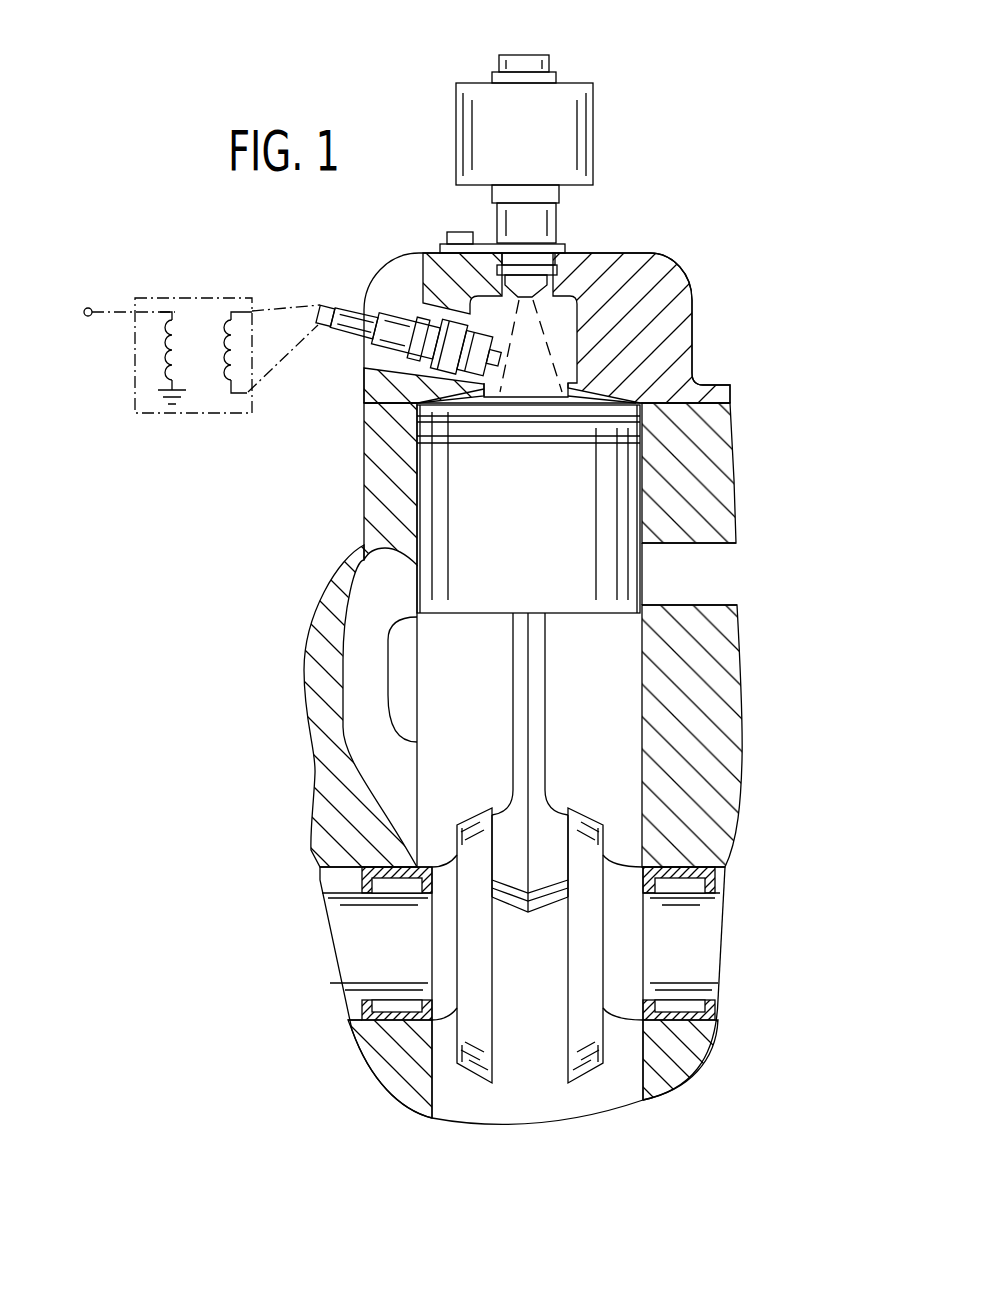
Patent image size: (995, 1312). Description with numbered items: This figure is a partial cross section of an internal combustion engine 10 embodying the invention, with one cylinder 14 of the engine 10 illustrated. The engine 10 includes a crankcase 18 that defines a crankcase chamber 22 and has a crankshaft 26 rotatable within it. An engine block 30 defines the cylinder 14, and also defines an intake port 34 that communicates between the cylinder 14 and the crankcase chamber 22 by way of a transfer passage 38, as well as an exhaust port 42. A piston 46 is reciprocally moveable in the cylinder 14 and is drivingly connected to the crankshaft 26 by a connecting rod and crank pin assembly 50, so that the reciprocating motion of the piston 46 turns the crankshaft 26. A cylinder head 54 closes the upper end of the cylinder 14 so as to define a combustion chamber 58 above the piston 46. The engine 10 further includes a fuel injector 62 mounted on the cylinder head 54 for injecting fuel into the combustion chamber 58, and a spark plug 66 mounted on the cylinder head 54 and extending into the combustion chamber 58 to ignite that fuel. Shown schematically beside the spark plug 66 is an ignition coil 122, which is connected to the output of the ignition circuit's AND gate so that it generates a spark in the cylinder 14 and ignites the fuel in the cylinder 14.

The internal combustion engine 10 is at (764, 197).
The cylinder 14 is at (425, 482).
The crankcase 18 is at (713, 728).
The crankcase chamber 22 is at (642, 1085).
The crankshaft 26 is at (626, 996).
The engine block 30 is at (705, 468).
The intake port 34 is at (365, 590).
The transfer passage 38 is at (357, 770).
The exhaust port 42 is at (688, 600).
The piston 46 is at (546, 531).
The connecting rod and crank pin assembly 50 is at (515, 703).
The cylinder head 54 is at (666, 272).
The combustion chamber 58 is at (578, 292).
The fuel injector 62 is at (580, 88).
The spark plug 66 is at (372, 312).
The ignition coil 122 is at (200, 298).